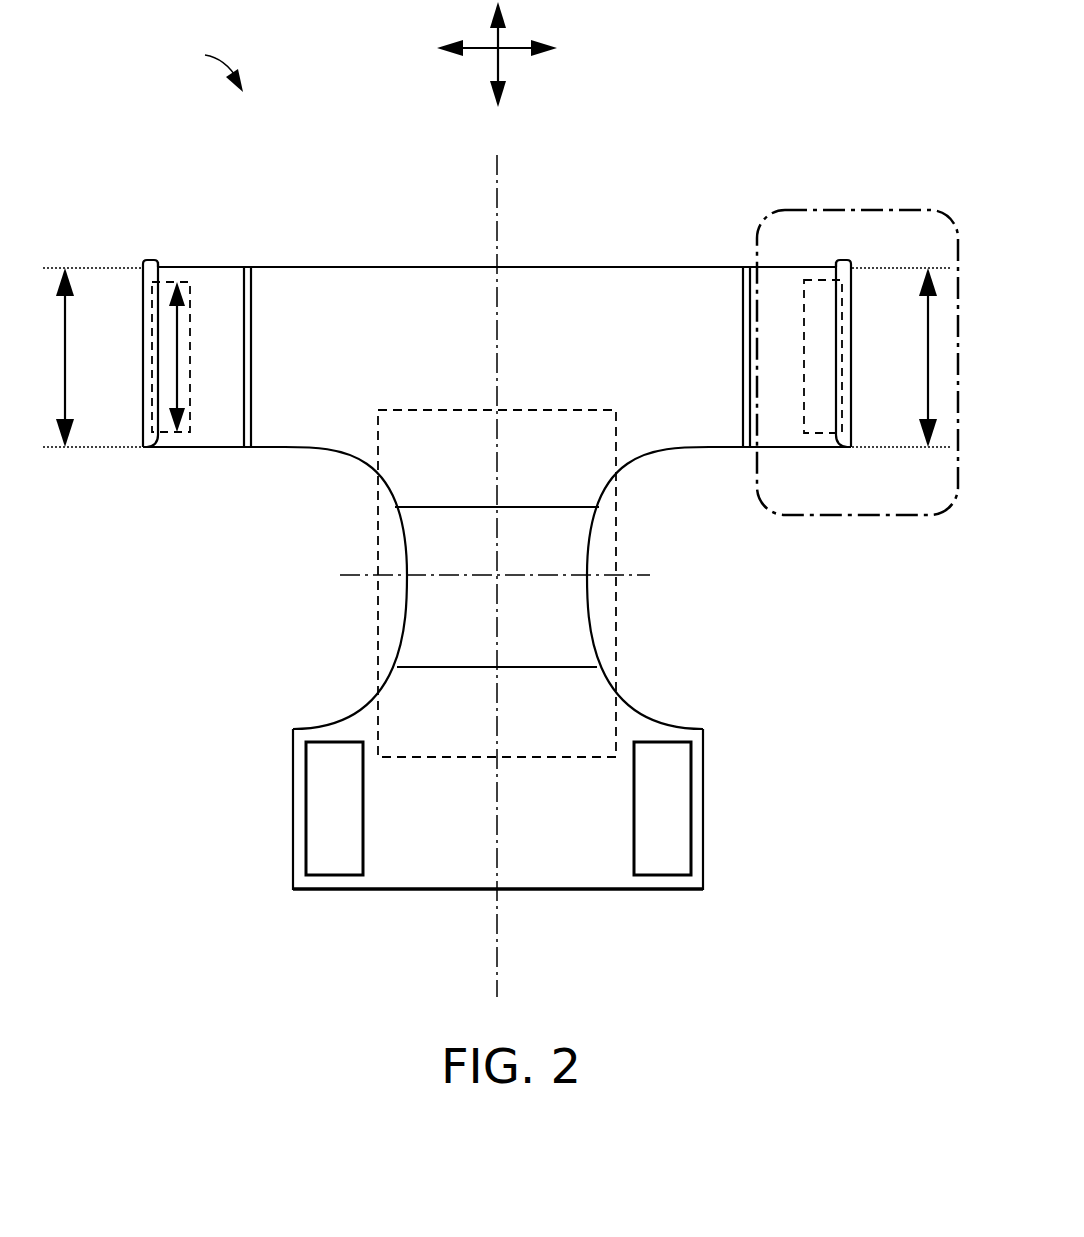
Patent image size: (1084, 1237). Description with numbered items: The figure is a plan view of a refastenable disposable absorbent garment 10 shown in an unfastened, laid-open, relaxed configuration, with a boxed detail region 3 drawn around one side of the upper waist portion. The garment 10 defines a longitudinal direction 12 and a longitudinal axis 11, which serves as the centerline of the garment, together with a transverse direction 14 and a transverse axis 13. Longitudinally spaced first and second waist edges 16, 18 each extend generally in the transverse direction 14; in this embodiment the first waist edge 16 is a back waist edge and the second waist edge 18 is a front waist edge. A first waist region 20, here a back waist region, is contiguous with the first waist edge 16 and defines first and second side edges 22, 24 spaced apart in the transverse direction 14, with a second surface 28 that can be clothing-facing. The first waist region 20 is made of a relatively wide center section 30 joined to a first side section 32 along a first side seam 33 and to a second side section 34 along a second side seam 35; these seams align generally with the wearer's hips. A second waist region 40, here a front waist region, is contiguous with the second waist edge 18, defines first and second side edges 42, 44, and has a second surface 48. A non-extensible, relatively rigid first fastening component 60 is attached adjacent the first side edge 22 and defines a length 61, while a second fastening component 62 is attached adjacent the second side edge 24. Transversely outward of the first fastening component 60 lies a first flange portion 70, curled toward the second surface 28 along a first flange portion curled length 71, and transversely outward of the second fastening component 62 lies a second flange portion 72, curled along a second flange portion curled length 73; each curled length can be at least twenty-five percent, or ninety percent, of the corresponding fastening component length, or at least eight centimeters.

The detail region 3 is at (815, 208).
The refastenable disposable absorbent garment 10 is at (202, 66).
The longitudinal axis 11 is at (500, 208).
The longitudinal direction 12 is at (494, 28).
The transverse axis 13 is at (360, 580).
The transverse direction 14 is at (510, 50).
The first waist edge 16 is at (474, 267).
The second waist edge 18 is at (475, 890).
The first waist region 20 is at (403, 305).
The first side edge of the first waist region 22 is at (163, 272).
The second side edge of the first waist region 24 is at (833, 280).
The second surface of the first waist region 28 is at (262, 302).
The center section 30 is at (283, 437).
The first side section 32 is at (213, 432).
The first side seam 33 is at (255, 378).
The second side section 34 is at (770, 432).
The second side seam 35 is at (742, 377).
The second waist region 40 is at (397, 878).
The first side edge of the second waist region 42 is at (292, 812).
The second side edge of the second waist region 44 is at (705, 805).
The second surface of the second waist region 48 is at (555, 878).
The first fastening component 60 is at (172, 448).
The length of the first fastening component 61 is at (178, 345).
The second fastening component 62 is at (815, 447).
The first flange portion 70 is at (148, 405).
The first flange portion curled length 71 is at (70, 320).
The second flange portion 72 is at (852, 382).
The second flange portion curled length 73 is at (925, 318).